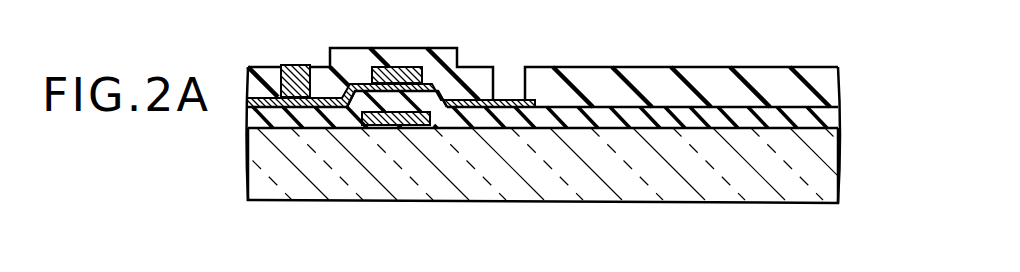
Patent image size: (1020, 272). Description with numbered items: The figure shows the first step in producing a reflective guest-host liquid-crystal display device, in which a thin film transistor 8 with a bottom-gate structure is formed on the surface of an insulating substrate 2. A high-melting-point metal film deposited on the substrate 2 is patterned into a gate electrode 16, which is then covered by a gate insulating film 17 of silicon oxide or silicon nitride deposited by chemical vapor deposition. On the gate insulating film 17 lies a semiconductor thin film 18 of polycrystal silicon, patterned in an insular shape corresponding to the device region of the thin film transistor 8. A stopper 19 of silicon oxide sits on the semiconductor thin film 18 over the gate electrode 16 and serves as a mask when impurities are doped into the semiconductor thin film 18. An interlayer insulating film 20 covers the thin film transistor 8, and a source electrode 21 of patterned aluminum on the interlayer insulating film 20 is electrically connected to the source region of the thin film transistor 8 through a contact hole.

The insulating substrate 2 is at (820, 163).
The thin film transistor 8 is at (407, 138).
The gate electrode 16 is at (356, 127).
The gate insulating film 17 is at (833, 122).
The semiconductor thin film 18 is at (518, 99).
The stopper 19 is at (412, 75).
The interlayer insulating film 20 is at (822, 90).
The source electrode 21 is at (298, 64).